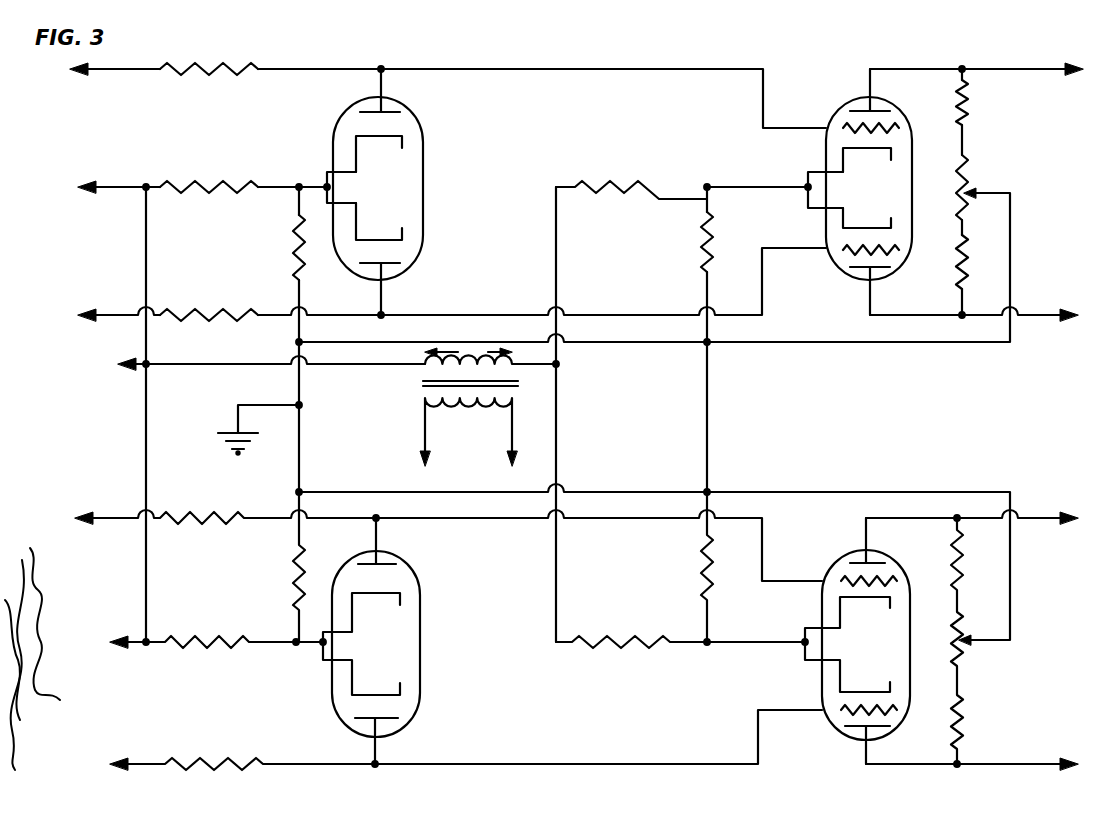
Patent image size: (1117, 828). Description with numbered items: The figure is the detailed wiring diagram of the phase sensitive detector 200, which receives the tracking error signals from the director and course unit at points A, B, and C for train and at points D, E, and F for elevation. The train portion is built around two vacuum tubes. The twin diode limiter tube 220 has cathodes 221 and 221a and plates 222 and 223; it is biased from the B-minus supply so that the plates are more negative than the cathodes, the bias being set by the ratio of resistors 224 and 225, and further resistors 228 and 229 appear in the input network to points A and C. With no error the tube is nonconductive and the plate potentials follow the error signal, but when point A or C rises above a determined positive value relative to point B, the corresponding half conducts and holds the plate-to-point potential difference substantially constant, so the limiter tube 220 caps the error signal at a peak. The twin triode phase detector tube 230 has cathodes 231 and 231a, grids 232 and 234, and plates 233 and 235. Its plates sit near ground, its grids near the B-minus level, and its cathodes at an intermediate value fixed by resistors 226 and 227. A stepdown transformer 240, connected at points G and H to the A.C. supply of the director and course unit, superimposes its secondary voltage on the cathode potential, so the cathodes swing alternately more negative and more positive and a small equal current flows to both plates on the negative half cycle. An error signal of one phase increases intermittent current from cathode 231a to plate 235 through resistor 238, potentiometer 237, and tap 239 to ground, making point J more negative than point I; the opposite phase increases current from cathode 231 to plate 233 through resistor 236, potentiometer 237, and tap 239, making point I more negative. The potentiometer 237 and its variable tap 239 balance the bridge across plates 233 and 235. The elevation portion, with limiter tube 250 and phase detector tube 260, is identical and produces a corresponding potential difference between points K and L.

The phase sensitive detector 200 is at (556, 403).
The twin diode limiter tube 220 is at (389, 192).
The cathode 221 is at (418, 142).
The cathode 221a is at (418, 240).
The plate 222 is at (370, 110).
The plate 223 is at (398, 270).
The resistor 224 is at (225, 192).
The resistor 225 is at (296, 262).
The resistor 226 is at (598, 185).
The resistor 227 is at (705, 268).
The 2 megohm resistor 228 is at (222, 75).
The 2 megohm resistor 229 is at (225, 308).
The twin triode phase detector tube 230 is at (856, 192).
The cathode 231 is at (898, 155).
The cathode 231a is at (898, 222).
The grid 232 is at (885, 127).
The plate 233 is at (855, 108).
The grid 234 is at (890, 255).
The plate 235 is at (878, 272).
The resistor 236 is at (968, 118).
The potentiometer 237 is at (965, 172).
The resistor 238 is at (965, 265).
The variable tap 239 is at (974, 192).
The stepdown transformer 240 is at (425, 387).
The limiter tube 250 is at (410, 660).
The phase detector tube 260 is at (822, 620).